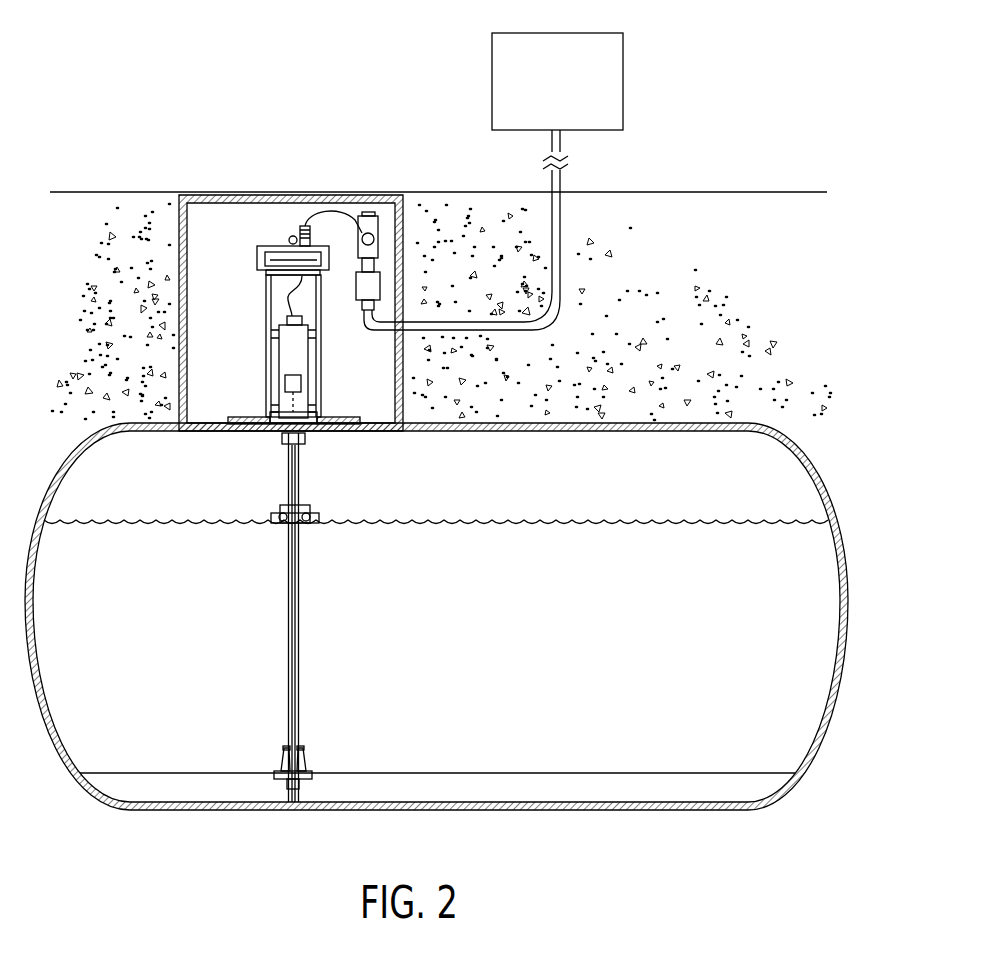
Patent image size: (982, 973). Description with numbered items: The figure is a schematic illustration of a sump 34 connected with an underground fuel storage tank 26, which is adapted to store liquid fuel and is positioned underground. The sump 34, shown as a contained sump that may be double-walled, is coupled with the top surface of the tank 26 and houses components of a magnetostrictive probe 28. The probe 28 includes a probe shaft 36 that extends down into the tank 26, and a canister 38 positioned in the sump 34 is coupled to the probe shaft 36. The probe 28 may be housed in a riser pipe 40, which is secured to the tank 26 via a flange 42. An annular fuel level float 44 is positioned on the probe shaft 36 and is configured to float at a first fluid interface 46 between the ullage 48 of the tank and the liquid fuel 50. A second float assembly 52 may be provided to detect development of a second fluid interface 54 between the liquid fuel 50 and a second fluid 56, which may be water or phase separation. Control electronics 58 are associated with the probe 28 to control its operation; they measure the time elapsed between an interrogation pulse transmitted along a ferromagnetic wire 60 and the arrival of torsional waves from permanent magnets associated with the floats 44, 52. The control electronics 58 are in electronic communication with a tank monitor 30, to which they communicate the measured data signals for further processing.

The fuel storage tank 26 is at (637, 422).
The magnetostrictive probe 28 is at (124, 321).
The tank monitor 30 is at (623, 88).
The sump 34 is at (403, 291).
The probe shaft 36 is at (298, 636).
The canister 38 is at (309, 364).
The riser pipe 40 is at (267, 316).
The flange 42 is at (231, 416).
The fuel level float 44 is at (319, 521).
The first fluid interface 46 is at (474, 520).
The ullage 48 is at (635, 485).
The liquid fuel 50 is at (635, 644).
The second float assembly 52 is at (320, 748).
The second fluid interface 54 is at (568, 770).
The second fluid 56 is at (635, 801).
The control electronics 58 is at (284, 381).
The ferromagnetic wire 60 is at (289, 653).